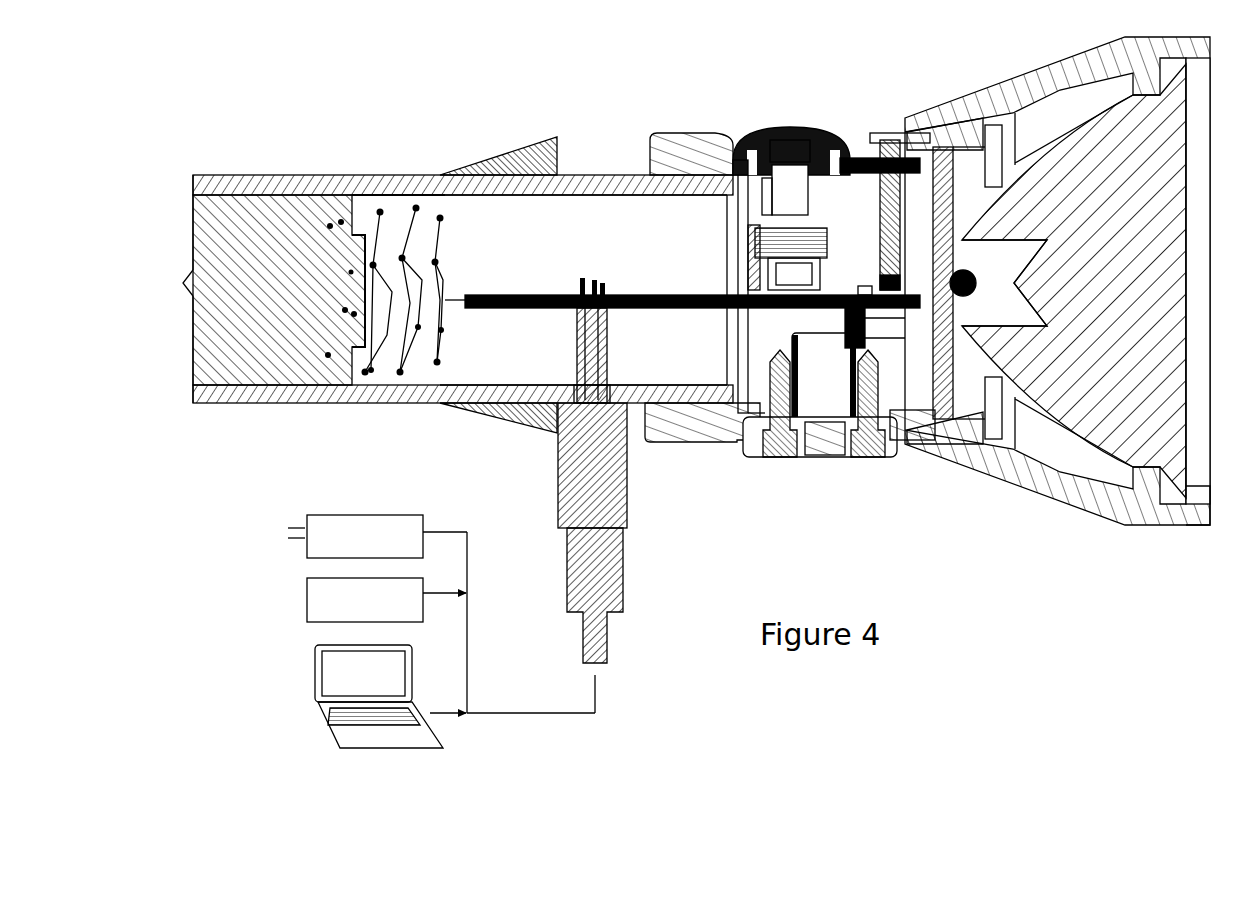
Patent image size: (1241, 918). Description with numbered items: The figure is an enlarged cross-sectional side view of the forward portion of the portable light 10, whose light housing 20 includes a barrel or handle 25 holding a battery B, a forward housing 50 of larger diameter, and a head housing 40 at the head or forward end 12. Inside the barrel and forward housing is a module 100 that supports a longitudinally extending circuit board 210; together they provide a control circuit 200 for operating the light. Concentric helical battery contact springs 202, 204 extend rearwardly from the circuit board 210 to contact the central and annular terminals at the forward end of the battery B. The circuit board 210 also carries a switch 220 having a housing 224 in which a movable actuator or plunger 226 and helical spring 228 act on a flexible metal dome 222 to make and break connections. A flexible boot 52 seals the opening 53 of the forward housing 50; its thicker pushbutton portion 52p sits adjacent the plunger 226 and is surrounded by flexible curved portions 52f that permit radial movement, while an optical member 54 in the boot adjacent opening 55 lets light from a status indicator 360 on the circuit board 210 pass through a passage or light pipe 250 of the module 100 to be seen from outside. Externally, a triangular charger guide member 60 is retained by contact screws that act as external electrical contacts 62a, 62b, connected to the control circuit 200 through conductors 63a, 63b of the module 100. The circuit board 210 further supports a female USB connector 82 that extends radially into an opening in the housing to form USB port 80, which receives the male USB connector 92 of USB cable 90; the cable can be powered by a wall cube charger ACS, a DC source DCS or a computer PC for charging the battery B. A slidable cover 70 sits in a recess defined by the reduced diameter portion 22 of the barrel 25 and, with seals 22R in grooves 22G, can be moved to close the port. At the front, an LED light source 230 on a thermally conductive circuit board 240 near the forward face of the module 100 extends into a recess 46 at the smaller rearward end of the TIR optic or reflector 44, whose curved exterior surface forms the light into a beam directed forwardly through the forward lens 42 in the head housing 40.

The portable light 10 is at (524, 64).
The head or forward end 12 is at (1214, 172).
The light housing 20 is at (355, 176).
The reduced diameter portion 22 is at (583, 175).
The grooves 22G is at (548, 195).
The seals 22R is at (628, 173).
The barrel 25 is at (405, 177).
The head housing 40 is at (1047, 62).
The forward lens 42 is at (1197, 500).
The TIR optic 44 is at (1068, 412).
The recess 46 is at (1030, 248).
The forward housing 50 is at (666, 133).
The flexible boot 52 is at (802, 128).
The curved portions 52f is at (758, 128).
The pushbutton portion 52p is at (787, 127).
The opening 53 is at (741, 145).
The optical member 54 is at (893, 130).
The opening 55 is at (887, 158).
The charger guide member 60 is at (830, 460).
The external electrical contact 62a is at (778, 460).
The external electrical contact 62b is at (870, 460).
The conductor 63a is at (815, 336).
The conductor 63b is at (850, 383).
The slidable cover 70 is at (527, 150).
The USB port 80 is at (578, 405).
The female USB connector 82 is at (577, 345).
The USB cable 90 is at (622, 580).
The male USB connector 92 is at (607, 372).
The module 100 is at (925, 389).
The control circuit 200 is at (650, 253).
The battery contact spring 202 is at (373, 390).
The battery contact spring 204 is at (358, 370).
The circuit board 210 is at (523, 293).
The switch 220 is at (798, 98).
The flexible metal dome 222 is at (745, 262).
The switch housing 224 is at (828, 238).
The actuator 226 is at (812, 192).
The helical spring 228 is at (735, 250).
The LED light source 230 is at (975, 291).
The circuit board 240 is at (950, 388).
The passage or light pipe 250 is at (896, 222).
The status indicator 360 is at (850, 292).
The battery B is at (275, 220).
The wall charger ACS is at (405, 515).
The DC source DCS is at (305, 600).
The computer PC is at (312, 718).